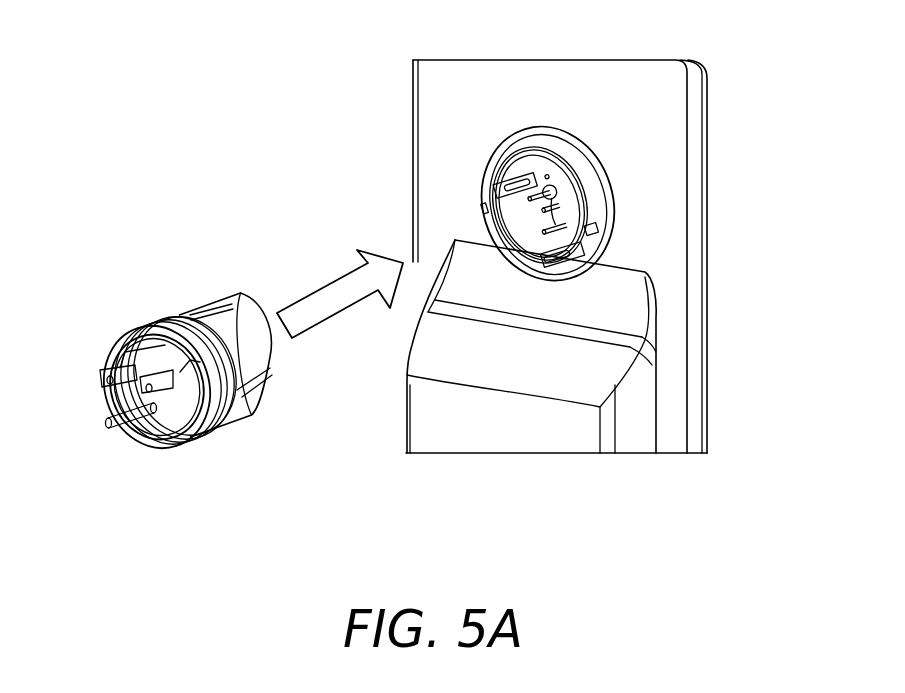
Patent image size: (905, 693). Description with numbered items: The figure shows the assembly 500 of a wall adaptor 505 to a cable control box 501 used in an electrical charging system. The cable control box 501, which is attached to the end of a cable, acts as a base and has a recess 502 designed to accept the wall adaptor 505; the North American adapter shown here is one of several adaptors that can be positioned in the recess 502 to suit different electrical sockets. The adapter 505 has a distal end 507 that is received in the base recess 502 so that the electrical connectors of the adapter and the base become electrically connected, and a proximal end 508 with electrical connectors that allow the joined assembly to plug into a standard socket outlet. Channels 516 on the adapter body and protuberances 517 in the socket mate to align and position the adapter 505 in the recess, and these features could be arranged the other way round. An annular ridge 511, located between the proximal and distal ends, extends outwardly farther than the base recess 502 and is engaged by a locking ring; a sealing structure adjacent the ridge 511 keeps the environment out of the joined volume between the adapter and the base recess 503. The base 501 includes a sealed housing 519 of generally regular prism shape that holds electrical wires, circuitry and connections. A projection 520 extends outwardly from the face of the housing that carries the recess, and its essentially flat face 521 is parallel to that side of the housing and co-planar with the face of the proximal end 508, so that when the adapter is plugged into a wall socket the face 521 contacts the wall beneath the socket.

The assembly 500 is at (382, 100).
The cable control box 501 is at (710, 163).
The recess 502 is at (580, 150).
The base recess 503 is at (532, 165).
The wall adaptor 505 is at (160, 322).
The distal end 507 is at (257, 323).
The proximal end 508 is at (118, 348).
The annular ridge 511 is at (183, 316).
The channels 516 is at (227, 303).
The protuberances 517 is at (557, 178).
The sealed housing 519 is at (695, 225).
The projection 520 is at (553, 423).
The face 521 is at (435, 443).